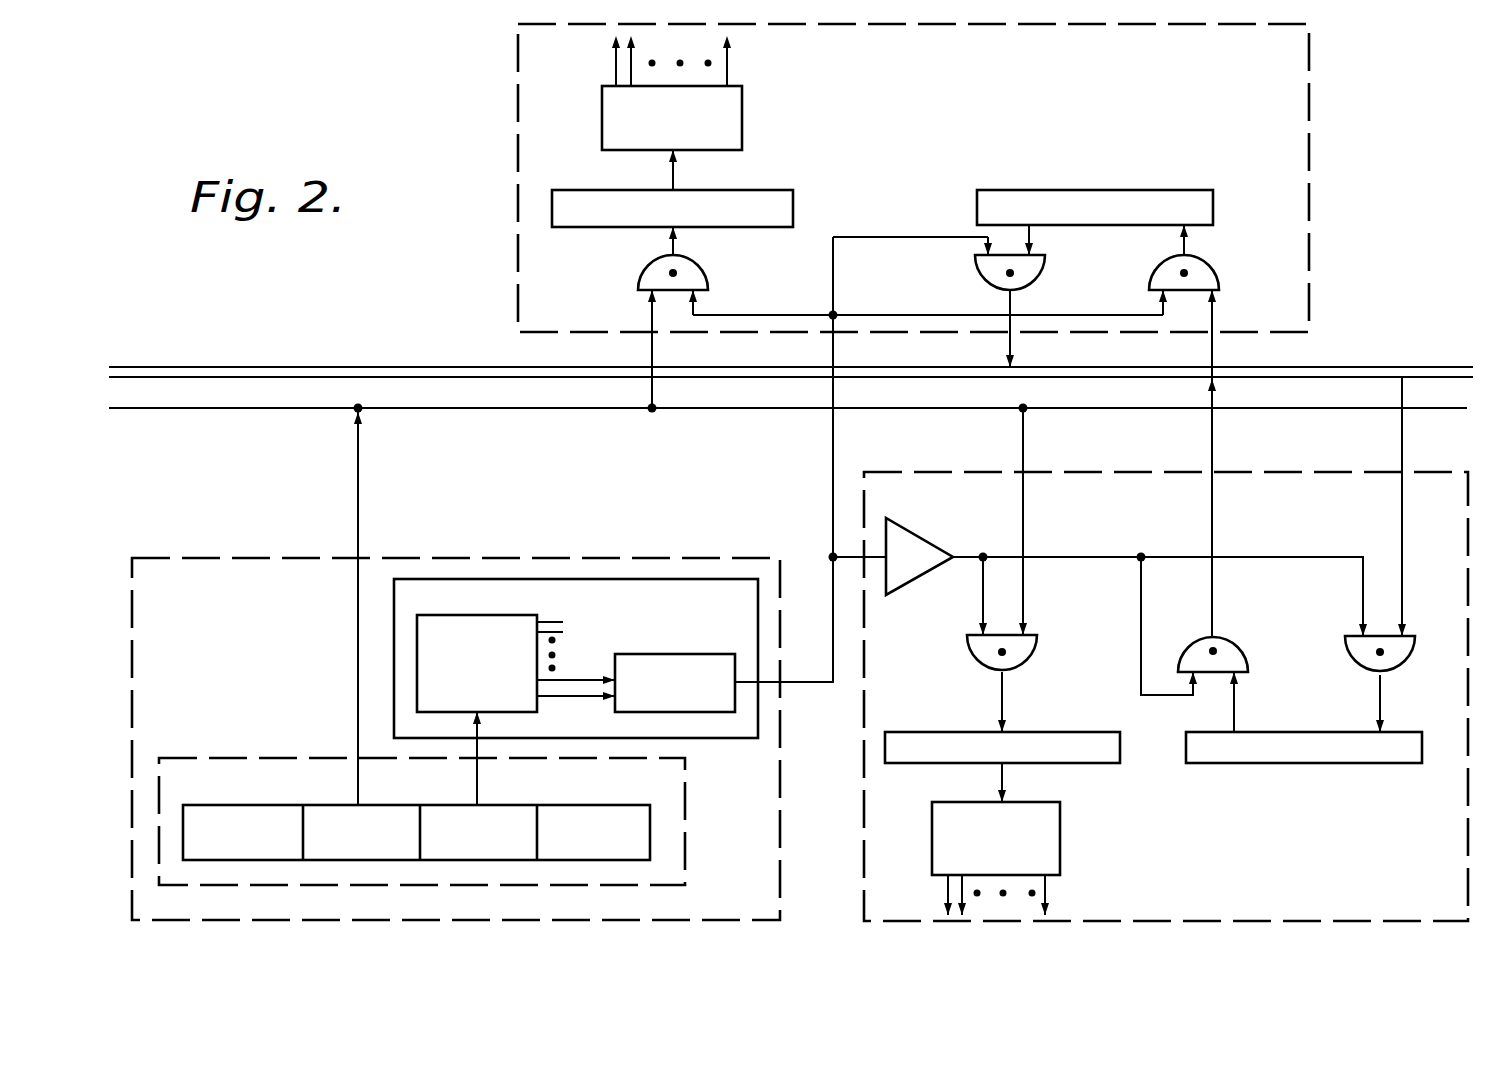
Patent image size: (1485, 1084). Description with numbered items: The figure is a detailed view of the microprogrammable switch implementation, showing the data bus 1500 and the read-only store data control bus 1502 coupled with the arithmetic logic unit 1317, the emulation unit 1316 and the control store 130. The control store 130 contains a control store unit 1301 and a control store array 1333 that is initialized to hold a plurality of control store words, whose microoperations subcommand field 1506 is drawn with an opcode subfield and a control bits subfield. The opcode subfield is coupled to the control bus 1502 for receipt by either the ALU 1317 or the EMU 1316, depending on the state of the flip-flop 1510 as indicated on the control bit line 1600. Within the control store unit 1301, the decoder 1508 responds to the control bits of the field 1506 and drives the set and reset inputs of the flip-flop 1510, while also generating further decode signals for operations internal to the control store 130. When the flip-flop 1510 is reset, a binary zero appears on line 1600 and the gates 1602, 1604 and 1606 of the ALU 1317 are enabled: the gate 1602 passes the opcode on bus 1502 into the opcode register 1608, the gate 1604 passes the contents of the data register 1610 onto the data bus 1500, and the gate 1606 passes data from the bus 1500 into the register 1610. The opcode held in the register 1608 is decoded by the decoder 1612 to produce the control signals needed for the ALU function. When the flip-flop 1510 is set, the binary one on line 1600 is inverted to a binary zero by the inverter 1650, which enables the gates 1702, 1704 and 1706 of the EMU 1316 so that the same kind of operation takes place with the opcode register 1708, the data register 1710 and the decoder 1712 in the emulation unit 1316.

The arithmetic logic unit (ALU) 1317 is at (518, 66).
The decoder 1612 is at (742, 102).
The opcode register 1608 is at (765, 190).
The data register 1610 is at (1035, 190).
The gate 1602 is at (638, 268).
The gate 1604 is at (975, 266).
The gate 1606 is at (1219, 272).
The data bus 1500 is at (258, 366).
The read-only store data control bus 1502 is at (195, 408).
The control bit line 1600 is at (833, 510).
The emulation unit (EMU) 1316 is at (1265, 472).
The inverter 1650 is at (912, 527).
The gate 1702 is at (967, 646).
The gate 1704 is at (1230, 640).
The gate 1706 is at (1350, 660).
The opcode register 1708 is at (1060, 732).
The data register 1710 is at (1300, 763).
The decoder 1712 is at (1060, 825).
The control store 130 is at (568, 558).
The control store unit (CSU) 1301 is at (697, 742).
The decoder 1508 is at (468, 615).
The flip-flop 1510 is at (650, 654).
The control store array 1333 is at (264, 742).
The microoperations subcommand field 1506 is at (548, 805).